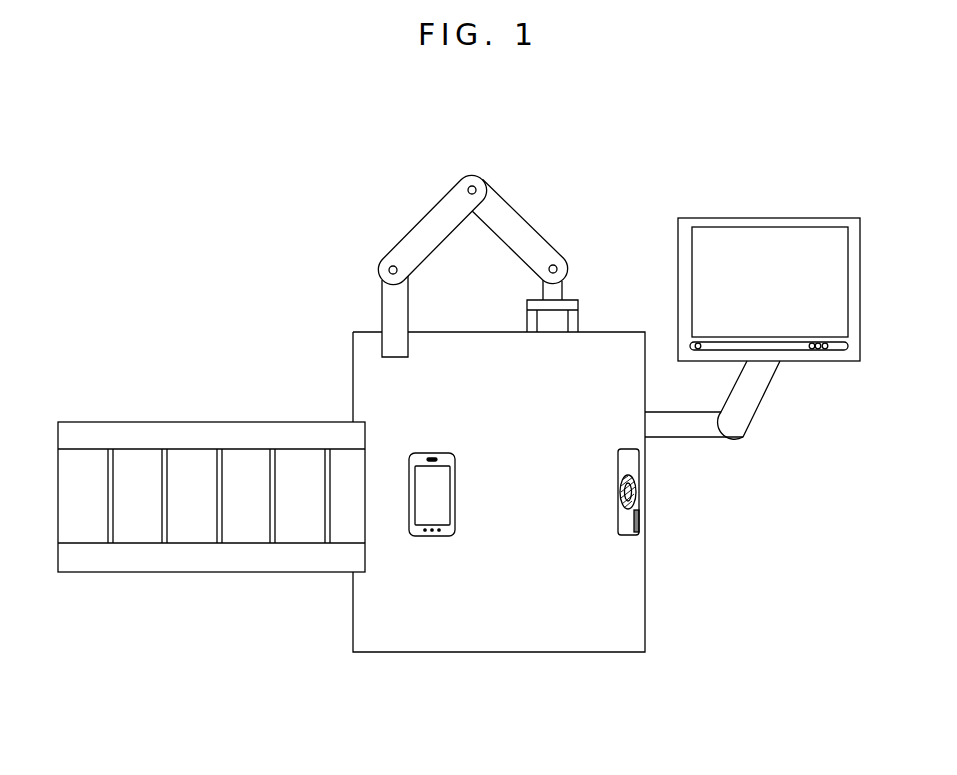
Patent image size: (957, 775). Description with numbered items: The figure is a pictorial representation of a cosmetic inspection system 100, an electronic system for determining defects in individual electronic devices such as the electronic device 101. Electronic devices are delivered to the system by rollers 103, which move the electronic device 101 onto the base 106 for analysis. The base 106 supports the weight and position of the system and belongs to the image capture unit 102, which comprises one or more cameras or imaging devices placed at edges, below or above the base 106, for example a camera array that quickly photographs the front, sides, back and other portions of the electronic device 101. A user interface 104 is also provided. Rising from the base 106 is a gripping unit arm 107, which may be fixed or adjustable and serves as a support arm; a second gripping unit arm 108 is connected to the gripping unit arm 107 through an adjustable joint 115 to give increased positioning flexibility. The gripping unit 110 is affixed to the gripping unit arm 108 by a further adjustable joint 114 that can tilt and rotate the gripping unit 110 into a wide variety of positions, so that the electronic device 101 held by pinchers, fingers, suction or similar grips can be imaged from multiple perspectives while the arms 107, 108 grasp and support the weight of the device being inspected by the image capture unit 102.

The cosmetic inspection system 100 is at (252, 143).
The electronic device 101 is at (418, 452).
The image capture unit 102 is at (636, 537).
The rollers 103 is at (197, 457).
The user interface 104 is at (792, 296).
The base 106 is at (520, 506).
The gripping unit arm 107 is at (382, 308).
The gripping unit arm 108 is at (408, 228).
The gripping unit 110 is at (578, 300).
The adjustable joint 114 is at (559, 263).
The adjustable joint 115 is at (380, 268).